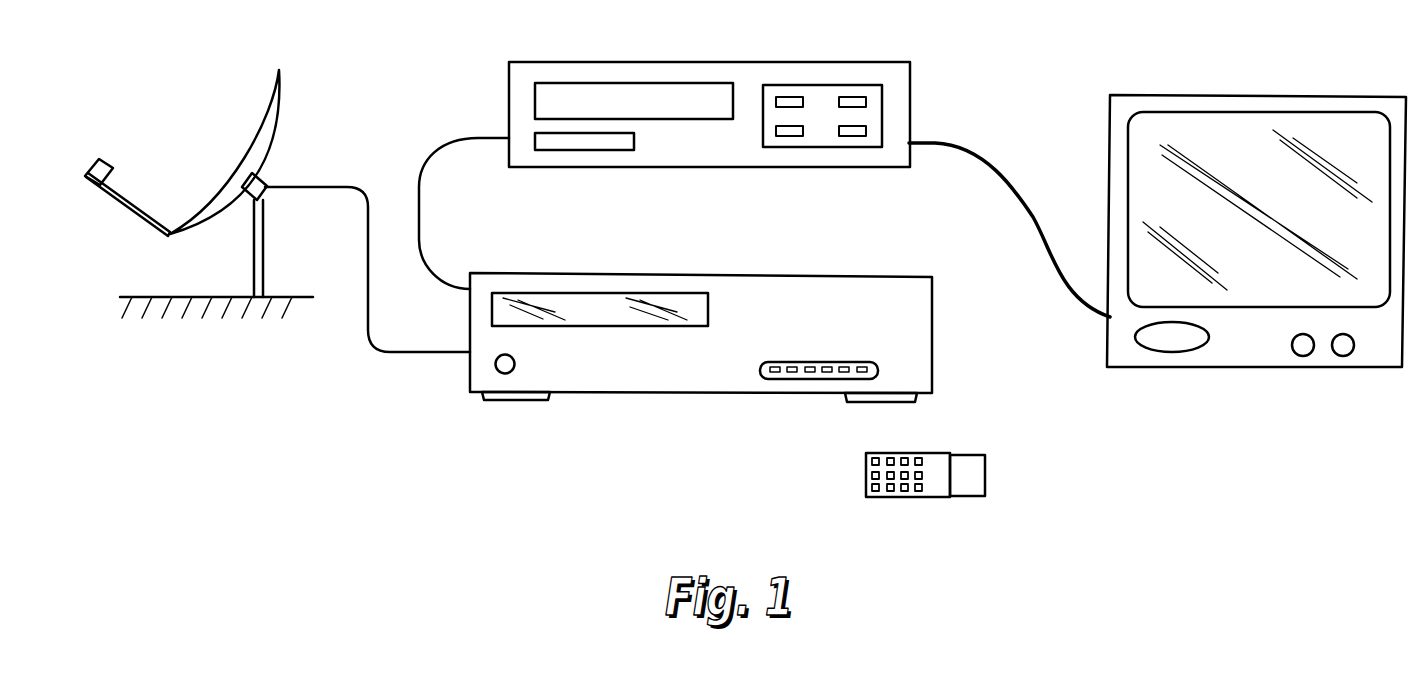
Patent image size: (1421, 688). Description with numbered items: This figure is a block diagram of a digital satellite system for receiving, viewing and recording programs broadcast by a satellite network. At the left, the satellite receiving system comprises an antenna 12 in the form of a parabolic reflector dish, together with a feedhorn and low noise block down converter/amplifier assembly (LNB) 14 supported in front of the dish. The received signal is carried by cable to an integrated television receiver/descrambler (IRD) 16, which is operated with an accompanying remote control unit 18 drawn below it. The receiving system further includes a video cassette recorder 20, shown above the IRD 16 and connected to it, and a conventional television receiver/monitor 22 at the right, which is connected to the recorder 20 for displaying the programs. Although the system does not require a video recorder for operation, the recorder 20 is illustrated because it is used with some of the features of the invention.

The antenna 12 is at (277, 110).
The feedhorn and low noise block down converter/amplifier assembly (LNB) 14 is at (90, 167).
The integrated television receiver/descrambler (IRD) 16 is at (667, 273).
The remote control unit 18 is at (897, 497).
The video cassette recorder 20 is at (668, 62).
The television receiver/monitor 22 is at (1210, 93).